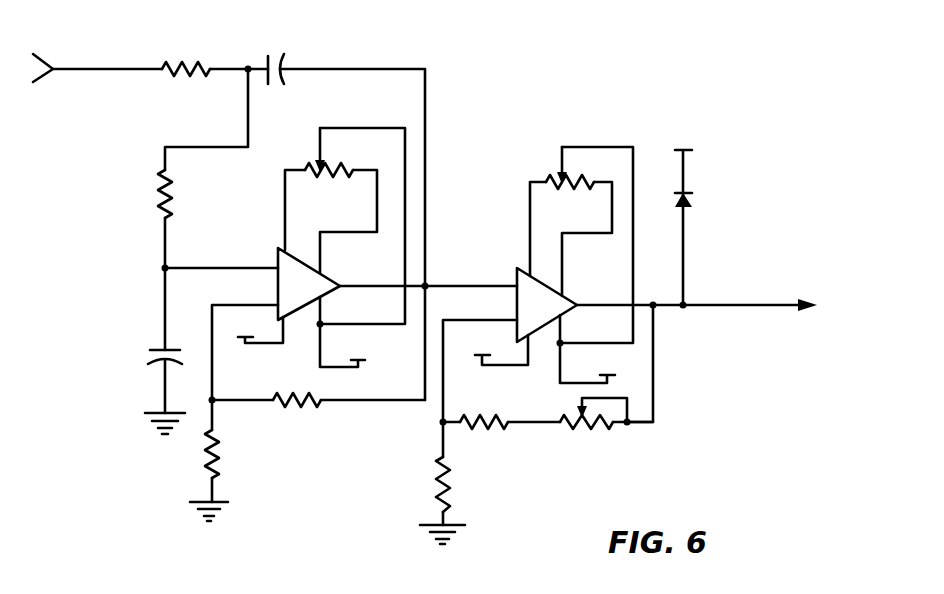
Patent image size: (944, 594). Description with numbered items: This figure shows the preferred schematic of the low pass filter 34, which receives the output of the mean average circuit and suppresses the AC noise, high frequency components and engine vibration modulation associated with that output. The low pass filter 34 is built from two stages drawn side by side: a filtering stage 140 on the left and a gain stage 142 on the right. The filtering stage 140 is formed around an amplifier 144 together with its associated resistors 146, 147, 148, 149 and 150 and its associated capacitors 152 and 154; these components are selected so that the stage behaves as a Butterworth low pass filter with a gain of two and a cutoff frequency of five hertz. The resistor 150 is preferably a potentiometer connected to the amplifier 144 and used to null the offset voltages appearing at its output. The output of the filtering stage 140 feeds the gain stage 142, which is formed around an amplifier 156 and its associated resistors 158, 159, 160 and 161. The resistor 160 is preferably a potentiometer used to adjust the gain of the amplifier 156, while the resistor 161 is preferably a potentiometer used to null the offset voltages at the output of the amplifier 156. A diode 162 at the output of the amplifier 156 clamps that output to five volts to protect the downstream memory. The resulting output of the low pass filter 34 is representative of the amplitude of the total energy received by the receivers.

The low pass filter 34 is at (540, 54).
The filtering stage 140 is at (306, 513).
The gain stage 142 is at (568, 515).
The amplifier 144 is at (297, 291).
The resistor 146 is at (188, 60).
The resistor 147 is at (172, 183).
The resistor 148 is at (310, 408).
The resistor 149 is at (214, 472).
The resistor 150 is at (305, 160).
The capacitor 152 is at (150, 350).
The capacitor 154 is at (268, 58).
The amplifier 156 is at (543, 310).
The resistor 158 is at (455, 490).
The resistor 159 is at (477, 425).
The resistor 160 is at (594, 428).
The resistor 161 is at (547, 175).
The diode 162 is at (690, 199).